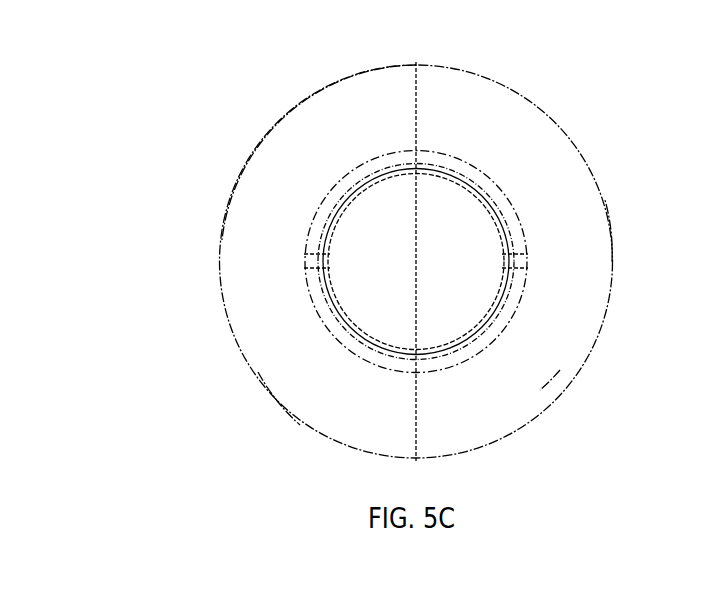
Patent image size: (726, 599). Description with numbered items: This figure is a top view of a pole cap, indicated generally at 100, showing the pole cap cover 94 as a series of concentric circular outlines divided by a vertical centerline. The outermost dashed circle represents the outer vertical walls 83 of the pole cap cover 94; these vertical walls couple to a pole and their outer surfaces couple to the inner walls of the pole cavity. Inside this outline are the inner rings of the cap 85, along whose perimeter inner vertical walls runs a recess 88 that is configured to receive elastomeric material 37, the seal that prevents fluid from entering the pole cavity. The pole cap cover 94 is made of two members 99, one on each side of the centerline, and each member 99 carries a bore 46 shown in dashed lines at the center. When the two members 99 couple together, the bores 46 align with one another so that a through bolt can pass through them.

The fluid connector assembly 100 is at (256, 59).
The pole cap cover 94 is at (257, 170).
The pole cap member 99 is at (581, 262).
The outer vertical walls 83 is at (565, 364).
The elastomeric material 37 is at (503, 243).
The recess 88 is at (500, 205).
The cap 85 is at (476, 195).
The bore 46 is at (503, 262).